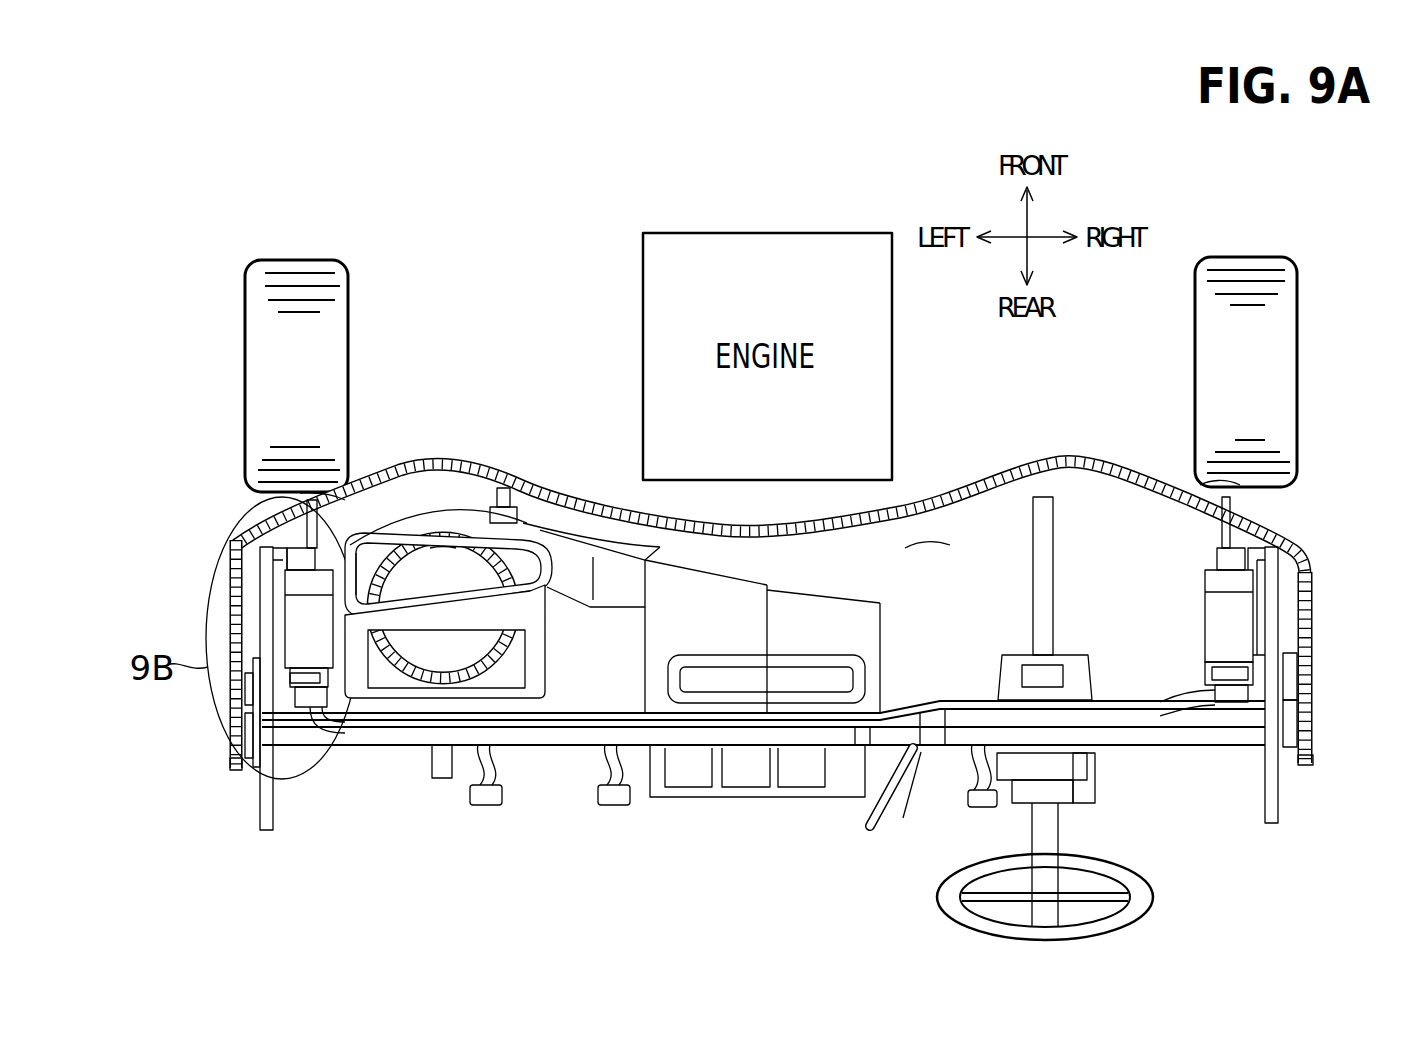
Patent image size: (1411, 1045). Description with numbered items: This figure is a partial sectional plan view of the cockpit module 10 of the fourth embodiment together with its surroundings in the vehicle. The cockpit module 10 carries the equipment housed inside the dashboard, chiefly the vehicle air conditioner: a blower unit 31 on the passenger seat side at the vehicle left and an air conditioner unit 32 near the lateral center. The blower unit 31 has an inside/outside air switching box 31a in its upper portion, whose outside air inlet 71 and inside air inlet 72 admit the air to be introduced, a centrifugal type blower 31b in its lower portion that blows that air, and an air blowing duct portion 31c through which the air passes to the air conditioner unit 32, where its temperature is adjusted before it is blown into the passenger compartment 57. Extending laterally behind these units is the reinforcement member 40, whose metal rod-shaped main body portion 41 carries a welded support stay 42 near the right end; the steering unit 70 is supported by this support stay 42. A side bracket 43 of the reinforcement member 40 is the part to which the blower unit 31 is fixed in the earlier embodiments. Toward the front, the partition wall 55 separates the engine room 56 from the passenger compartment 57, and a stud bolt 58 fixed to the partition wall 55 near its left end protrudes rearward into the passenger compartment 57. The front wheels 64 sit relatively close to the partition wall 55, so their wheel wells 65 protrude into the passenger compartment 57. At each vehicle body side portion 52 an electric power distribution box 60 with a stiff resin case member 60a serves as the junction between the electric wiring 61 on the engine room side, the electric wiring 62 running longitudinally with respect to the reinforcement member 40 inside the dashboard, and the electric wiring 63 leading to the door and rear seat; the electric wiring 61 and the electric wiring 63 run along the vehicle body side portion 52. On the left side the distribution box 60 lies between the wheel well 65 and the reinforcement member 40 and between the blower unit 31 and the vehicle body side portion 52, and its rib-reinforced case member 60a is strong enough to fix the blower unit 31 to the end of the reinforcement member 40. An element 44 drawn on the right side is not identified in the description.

The vehicle cockpit module 10 is at (955, 623).
The blower unit 31 is at (413, 513).
The inside/outside air switching box 31a is at (373, 543).
The centrifugal type blower 31b is at (463, 550).
The air blowing duct portion 31c is at (675, 528).
The air conditioner unit 32 is at (721, 622).
The reinforcement member 40 is at (543, 745).
The main body portion 41 is at (523, 735).
The support stay 42 is at (1055, 765).
The side bracket 43 is at (238, 665).
The right side wall 44 is at (1307, 660).
The vehicle body side portion 52 is at (233, 750).
The partition wall 55 is at (820, 524).
The engine room 56 is at (927, 480).
The passenger compartment 57 is at (935, 548).
The stud bolt 58 is at (518, 505).
The electric power distribution box 60 is at (283, 634).
The case member 60a is at (302, 618).
The electric wiring 61 is at (316, 513).
The electric wiring 62 is at (895, 801).
The electric wiring 63 is at (273, 815).
The front wheels 64 is at (246, 340).
The wheel wells 65 is at (335, 490).
The steering unit 70 is at (1153, 905).
The outside air inlet 71 is at (583, 568).
The inside air inlet 72 is at (532, 663).